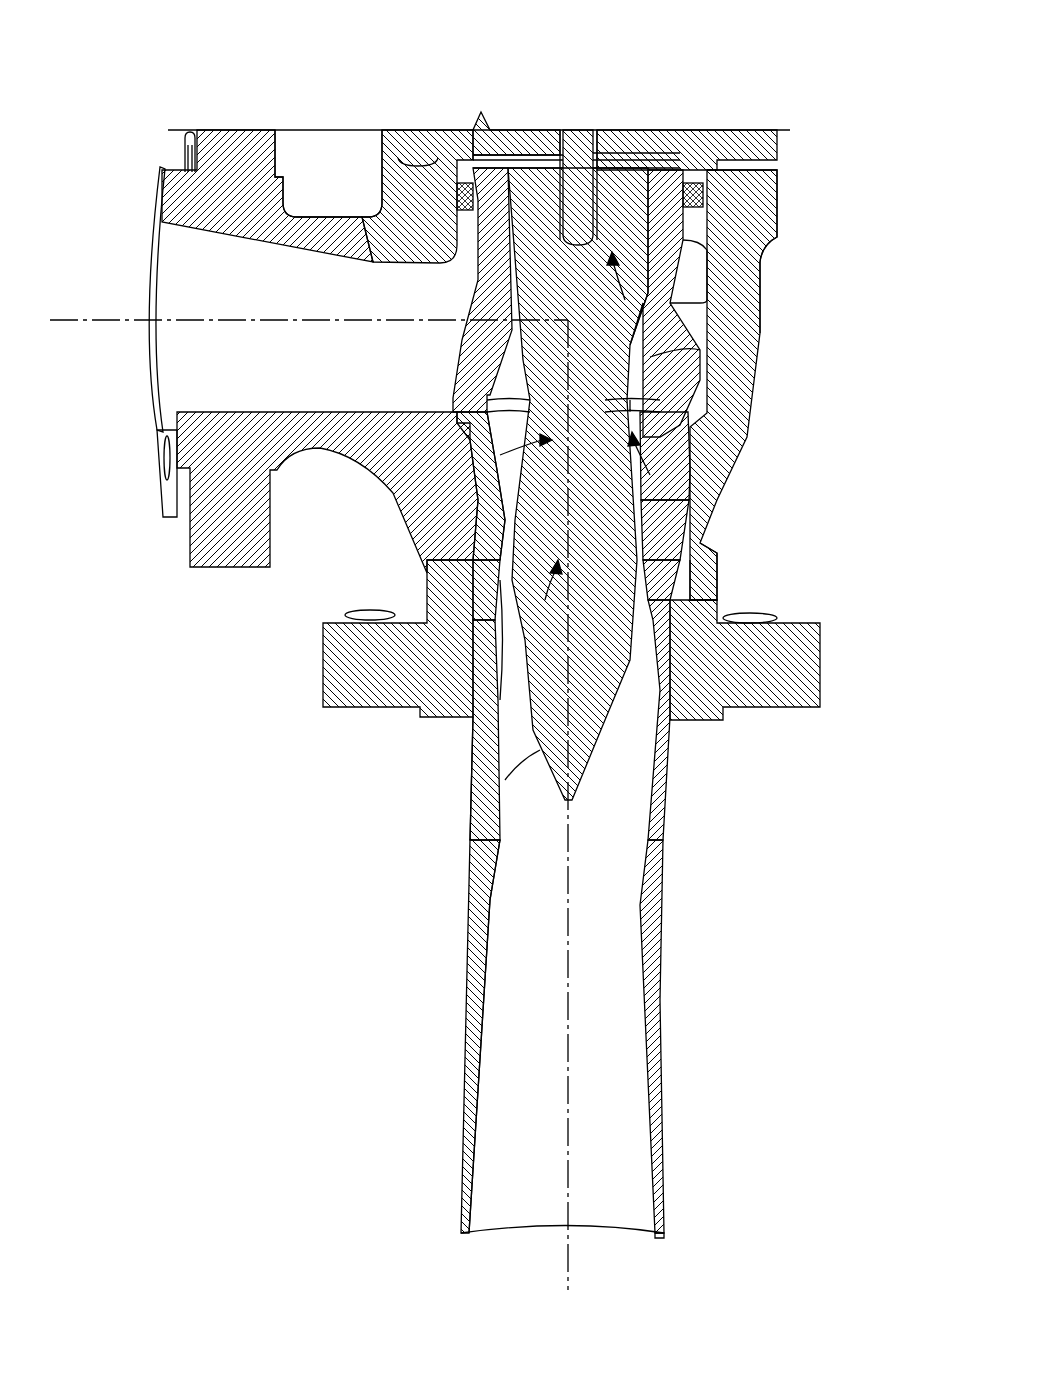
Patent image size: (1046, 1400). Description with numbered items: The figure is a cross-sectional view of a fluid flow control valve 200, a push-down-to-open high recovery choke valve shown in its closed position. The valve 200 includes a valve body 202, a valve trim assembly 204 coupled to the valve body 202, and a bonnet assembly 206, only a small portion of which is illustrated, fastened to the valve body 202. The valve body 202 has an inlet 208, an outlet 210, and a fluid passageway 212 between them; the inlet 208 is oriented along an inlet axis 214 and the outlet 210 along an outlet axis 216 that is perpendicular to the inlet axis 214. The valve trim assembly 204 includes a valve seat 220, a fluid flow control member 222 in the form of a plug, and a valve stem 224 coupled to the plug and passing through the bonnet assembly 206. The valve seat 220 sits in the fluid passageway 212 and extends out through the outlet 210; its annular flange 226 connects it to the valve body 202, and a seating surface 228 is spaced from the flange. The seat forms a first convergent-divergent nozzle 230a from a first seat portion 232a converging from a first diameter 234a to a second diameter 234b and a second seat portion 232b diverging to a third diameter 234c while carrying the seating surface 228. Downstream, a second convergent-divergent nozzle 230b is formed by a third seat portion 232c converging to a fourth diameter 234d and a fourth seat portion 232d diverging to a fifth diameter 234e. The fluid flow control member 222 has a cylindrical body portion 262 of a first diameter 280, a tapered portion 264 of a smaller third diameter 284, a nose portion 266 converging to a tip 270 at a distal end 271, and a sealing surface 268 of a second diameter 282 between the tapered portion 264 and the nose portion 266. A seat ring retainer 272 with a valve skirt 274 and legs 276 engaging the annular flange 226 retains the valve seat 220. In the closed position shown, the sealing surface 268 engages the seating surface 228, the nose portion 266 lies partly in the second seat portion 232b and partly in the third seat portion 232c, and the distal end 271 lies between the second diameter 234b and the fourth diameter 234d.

The fluid flow control valve 200 is at (138, 30).
The valve body 202 is at (248, 130).
The valve trim assembly 204 is at (462, 283).
The bonnet assembly 206 is at (427, 130).
The inlet 208 is at (136, 360).
The outlet 210 is at (460, 764).
The fluid passageway 212 is at (232, 283).
The inlet axis 214 is at (58, 318).
The outlet axis 216 is at (565, 1255).
The valve seat 220 is at (648, 532).
The fluid flow control member 222 is at (613, 185).
The valve stem 224 is at (575, 130).
The annular flange 226 is at (700, 472).
The seating surface 228 is at (707, 590).
The first convergent-divergent nozzle 230a is at (478, 540).
The second convergent-divergent nozzle 230b is at (474, 897).
The first seat portion 232a is at (482, 503).
The second seat portion 232b is at (468, 640).
The third seat portion 232c is at (480, 790).
The fourth seat portion 232d is at (470, 1012).
The first diameter 234a is at (700, 500).
The second diameter 234b is at (700, 552).
The third diameter 234c is at (656, 698).
The fourth diameter 234d is at (654, 900).
The fifth diameter 234e is at (670, 1222).
The body portion 262 is at (643, 300).
The tapered portion 264 is at (610, 370).
The nose portion 266 is at (600, 677).
The sealing surface 268 is at (468, 600).
The tip 270 is at (575, 802).
The distal end 271 is at (527, 815).
The seat ring retainer 272 is at (697, 423).
The valve skirt 274 is at (613, 228).
The legs 276 is at (677, 357).
The first diameter 280 is at (550, 230).
The second diameter 282 is at (500, 718).
The third diameter 284 is at (487, 468).